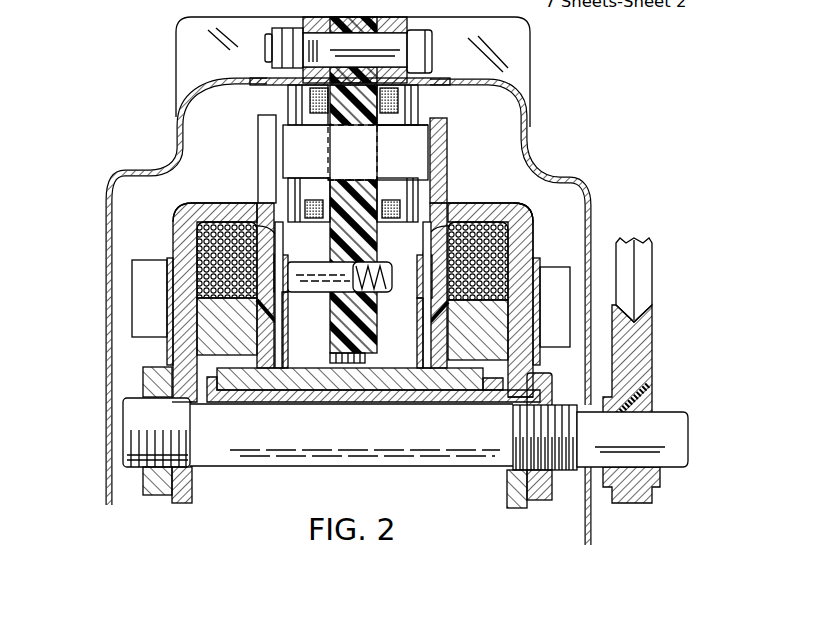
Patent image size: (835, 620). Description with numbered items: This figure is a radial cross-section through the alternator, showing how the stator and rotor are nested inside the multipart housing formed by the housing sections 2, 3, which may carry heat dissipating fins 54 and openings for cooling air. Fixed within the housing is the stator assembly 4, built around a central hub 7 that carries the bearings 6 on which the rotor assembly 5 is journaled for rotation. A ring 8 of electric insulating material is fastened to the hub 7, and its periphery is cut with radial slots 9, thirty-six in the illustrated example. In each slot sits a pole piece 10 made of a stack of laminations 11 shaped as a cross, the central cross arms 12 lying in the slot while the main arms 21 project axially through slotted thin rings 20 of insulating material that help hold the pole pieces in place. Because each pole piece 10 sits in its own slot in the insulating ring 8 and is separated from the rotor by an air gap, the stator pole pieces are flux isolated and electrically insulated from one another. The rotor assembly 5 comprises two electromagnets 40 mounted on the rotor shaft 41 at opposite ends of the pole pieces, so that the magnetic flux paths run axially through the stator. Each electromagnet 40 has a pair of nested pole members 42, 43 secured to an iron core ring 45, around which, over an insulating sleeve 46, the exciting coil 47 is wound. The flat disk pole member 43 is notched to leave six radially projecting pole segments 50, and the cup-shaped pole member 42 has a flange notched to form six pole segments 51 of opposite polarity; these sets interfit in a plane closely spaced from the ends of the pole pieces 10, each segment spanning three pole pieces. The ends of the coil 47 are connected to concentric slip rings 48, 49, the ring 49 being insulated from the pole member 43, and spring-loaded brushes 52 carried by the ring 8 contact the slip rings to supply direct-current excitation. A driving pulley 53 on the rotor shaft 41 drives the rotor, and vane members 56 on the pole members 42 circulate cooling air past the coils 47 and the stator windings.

The housing section 2 is at (160, 157).
The housing section 3 is at (572, 175).
The stator assembly 4 is at (382, 12).
The rotor assembly 5 is at (536, 221).
The bearings 6 is at (382, 410).
The central hub 7 is at (433, 363).
The ring of electric insulating material 8 is at (370, 355).
The radial slots 9 is at (323, 156).
The pole piece 10 is at (400, 132).
The laminations 11 is at (334, 147).
The central cross arms 12 is at (335, 118).
The thin rings of insulating material 20 is at (372, 197).
The main arms 21 is at (290, 137).
The electromagnet 40 is at (197, 200).
The rotor shaft 41 is at (457, 462).
The pole member 42 is at (192, 482).
The pole member 43 is at (270, 360).
The iron core ring 45 is at (200, 334).
The insulating sleeve 46 is at (197, 302).
The exciting coil 47 is at (228, 247).
The slip ring 48 is at (283, 262).
The slip ring 49 is at (283, 326).
The pole segments 50 is at (266, 205).
The pole segments 51 is at (263, 129).
The spring-loaded brushes 52 is at (310, 283).
The driving pulley 53 is at (642, 357).
The heat dissipating fins 54 is at (187, 62).
The vane members 56 is at (148, 291).